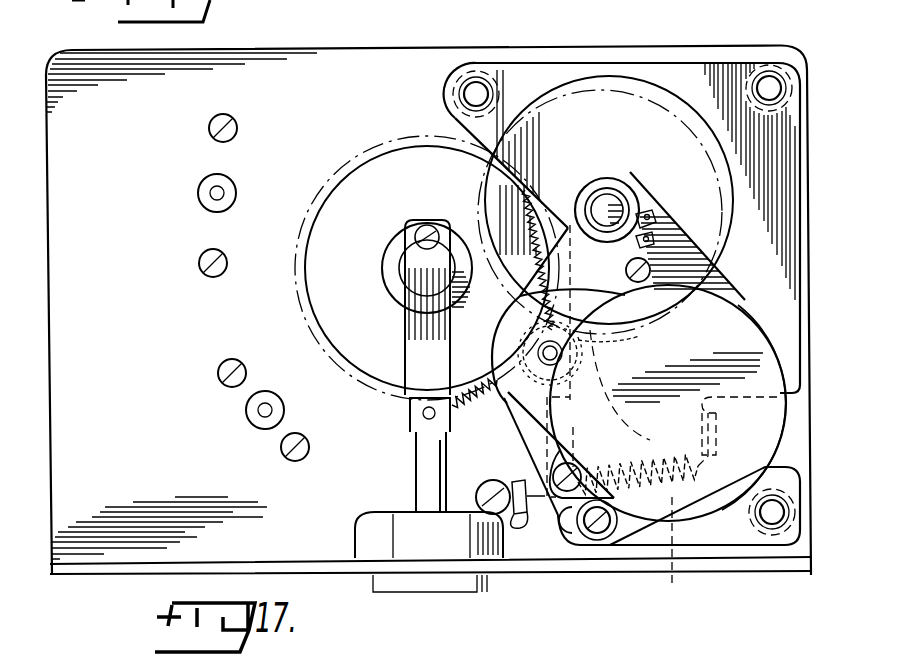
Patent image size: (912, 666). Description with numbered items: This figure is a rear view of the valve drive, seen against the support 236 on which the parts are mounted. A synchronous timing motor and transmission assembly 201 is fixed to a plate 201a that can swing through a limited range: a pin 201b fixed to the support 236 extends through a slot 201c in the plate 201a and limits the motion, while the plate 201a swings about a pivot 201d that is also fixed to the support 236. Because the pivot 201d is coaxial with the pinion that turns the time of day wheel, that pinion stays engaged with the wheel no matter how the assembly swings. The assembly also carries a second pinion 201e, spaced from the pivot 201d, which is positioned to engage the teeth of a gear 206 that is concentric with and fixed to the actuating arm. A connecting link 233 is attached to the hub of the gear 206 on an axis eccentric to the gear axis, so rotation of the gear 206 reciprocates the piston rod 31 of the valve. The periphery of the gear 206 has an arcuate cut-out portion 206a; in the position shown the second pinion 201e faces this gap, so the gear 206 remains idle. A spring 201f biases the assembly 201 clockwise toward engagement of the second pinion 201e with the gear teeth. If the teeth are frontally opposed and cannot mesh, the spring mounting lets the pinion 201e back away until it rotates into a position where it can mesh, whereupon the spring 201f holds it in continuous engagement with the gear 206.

The support 236 is at (377, 50).
The gear 206 is at (338, 290).
The connecting link 233 is at (414, 374).
The piston rod 31 is at (427, 461).
The arcuate cut-out portion 206a is at (518, 420).
The timing motor and transmission assembly 201 is at (763, 430).
The plate 201a is at (750, 300).
The pin 201b is at (597, 535).
The slot 201c is at (568, 545).
The pivot 201d is at (602, 203).
The second pinion 201e is at (572, 408).
The spring 201f is at (672, 583).